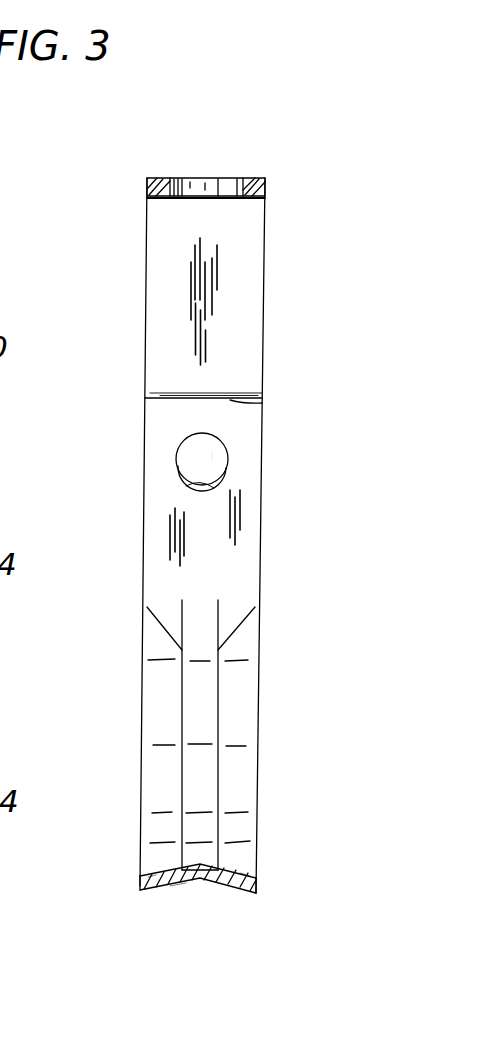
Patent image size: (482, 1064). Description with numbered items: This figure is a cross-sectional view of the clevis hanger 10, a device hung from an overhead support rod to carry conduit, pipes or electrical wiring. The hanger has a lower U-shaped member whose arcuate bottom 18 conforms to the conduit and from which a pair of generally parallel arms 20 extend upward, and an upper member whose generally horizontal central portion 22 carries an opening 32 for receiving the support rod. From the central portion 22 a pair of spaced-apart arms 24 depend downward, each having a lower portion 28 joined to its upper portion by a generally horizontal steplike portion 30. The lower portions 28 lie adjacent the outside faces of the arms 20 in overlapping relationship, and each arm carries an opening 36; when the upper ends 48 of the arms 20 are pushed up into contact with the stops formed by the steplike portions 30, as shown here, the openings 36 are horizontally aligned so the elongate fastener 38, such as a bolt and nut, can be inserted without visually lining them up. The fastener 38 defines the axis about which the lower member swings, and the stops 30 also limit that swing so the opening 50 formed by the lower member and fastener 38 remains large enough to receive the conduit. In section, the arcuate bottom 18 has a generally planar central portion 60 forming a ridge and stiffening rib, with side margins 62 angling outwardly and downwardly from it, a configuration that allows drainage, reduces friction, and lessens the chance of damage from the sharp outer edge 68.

The clevis hanger 10 is at (0, 232).
The arcuate bottom 18 is at (163, 890).
The arms 20 is at (250, 498).
The central portion 22 is at (158, 178).
The arms 24 is at (248, 273).
The lower portion 28 is at (5, 409).
The steplike portion 30 is at (263, 403).
The opening 32 is at (230, 178).
The opening 36 is at (178, 488).
The elongate fastener 38 is at (210, 465).
The upper ends 48 is at (175, 398).
The opening 50 is at (19, 717).
The central portion 60 is at (200, 872).
The side margins 62 is at (155, 878).
The outer edge 68 is at (140, 886).